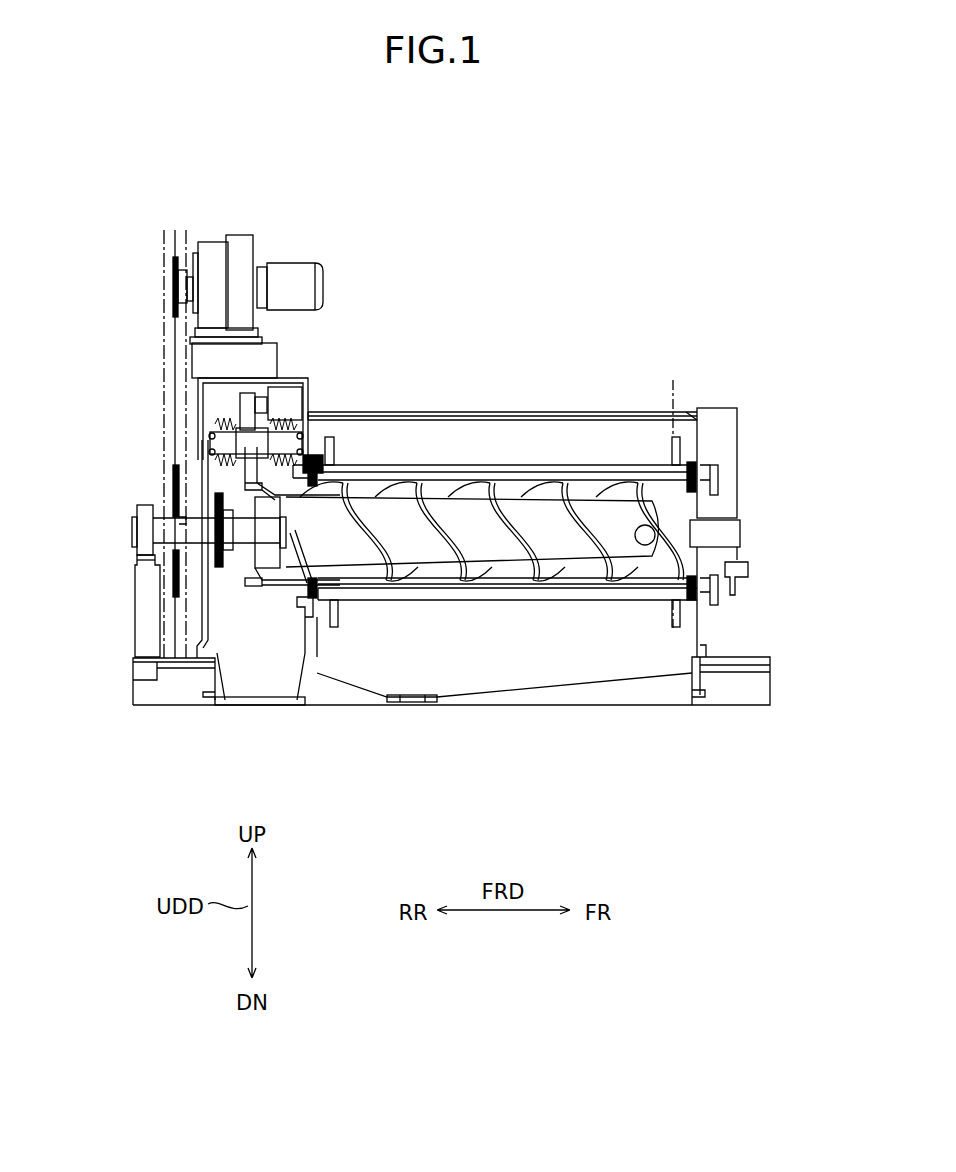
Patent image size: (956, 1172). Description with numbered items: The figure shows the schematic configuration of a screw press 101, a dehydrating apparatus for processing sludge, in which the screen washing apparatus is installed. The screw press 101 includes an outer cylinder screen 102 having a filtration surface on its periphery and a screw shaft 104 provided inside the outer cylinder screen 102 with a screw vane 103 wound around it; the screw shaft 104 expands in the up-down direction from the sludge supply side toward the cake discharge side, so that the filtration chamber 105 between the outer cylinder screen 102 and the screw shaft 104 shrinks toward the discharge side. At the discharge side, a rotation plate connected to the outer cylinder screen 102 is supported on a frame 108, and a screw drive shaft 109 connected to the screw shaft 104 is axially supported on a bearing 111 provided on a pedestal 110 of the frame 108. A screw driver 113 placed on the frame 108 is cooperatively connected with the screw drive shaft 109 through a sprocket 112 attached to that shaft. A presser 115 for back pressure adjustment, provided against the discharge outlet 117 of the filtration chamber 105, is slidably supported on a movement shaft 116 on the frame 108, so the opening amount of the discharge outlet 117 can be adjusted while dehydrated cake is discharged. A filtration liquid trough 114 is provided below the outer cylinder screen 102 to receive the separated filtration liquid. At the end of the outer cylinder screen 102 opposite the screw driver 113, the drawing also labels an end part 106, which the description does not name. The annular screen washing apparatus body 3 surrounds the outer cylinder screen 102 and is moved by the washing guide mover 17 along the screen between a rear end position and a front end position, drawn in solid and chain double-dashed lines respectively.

The screw press 101 is at (501, 258).
The screen washing apparatus body 3 is at (675, 436).
The washing guide mover 17 is at (526, 408).
The outer cylinder screen 102 is at (423, 455).
The screw vane 103 is at (342, 478).
The screw shaft 104 is at (390, 505).
The filtration chamber 105 is at (412, 573).
The end bearing portion 106 is at (745, 480).
The frame 108 is at (206, 438).
The screw drive shaft 109 is at (136, 546).
The pedestal 110 is at (144, 632).
The bearing 111 is at (146, 528).
The sprocket 112 is at (172, 480).
The screw driver 113 is at (213, 250).
The filtration liquid trough 114 is at (520, 680).
The presser 115 is at (252, 588).
The movement shaft 116 is at (215, 440).
The discharge outlet 117 is at (276, 592).